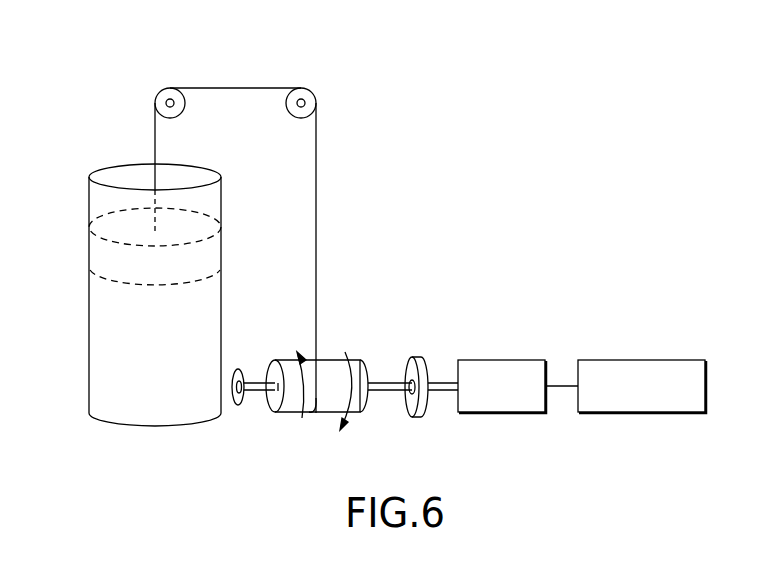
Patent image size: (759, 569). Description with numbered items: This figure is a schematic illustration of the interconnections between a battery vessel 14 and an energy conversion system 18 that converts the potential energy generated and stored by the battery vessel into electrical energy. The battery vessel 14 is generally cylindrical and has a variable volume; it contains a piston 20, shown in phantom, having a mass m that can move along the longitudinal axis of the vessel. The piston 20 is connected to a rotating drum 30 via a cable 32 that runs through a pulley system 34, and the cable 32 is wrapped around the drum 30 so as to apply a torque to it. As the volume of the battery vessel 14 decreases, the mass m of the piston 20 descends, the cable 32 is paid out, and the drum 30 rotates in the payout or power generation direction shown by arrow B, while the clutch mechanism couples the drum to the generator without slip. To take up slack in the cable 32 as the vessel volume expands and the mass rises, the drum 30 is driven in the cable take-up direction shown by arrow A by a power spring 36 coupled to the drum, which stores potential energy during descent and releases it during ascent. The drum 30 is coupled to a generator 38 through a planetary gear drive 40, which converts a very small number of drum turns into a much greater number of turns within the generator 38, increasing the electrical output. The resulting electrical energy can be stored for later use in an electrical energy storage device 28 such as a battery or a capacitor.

The battery vessel 14 is at (89, 250).
The piston 20 is at (101, 266).
The cable 32 is at (232, 87).
The pulley system 34 is at (136, 78).
The power spring 36 is at (257, 382).
The rotating drum 30 is at (290, 406).
The energy conversion system 18 is at (437, 259).
The planetary gear drive 40 is at (415, 356).
The generator 38 is at (517, 358).
The electrical energy storage device 28 is at (653, 358).